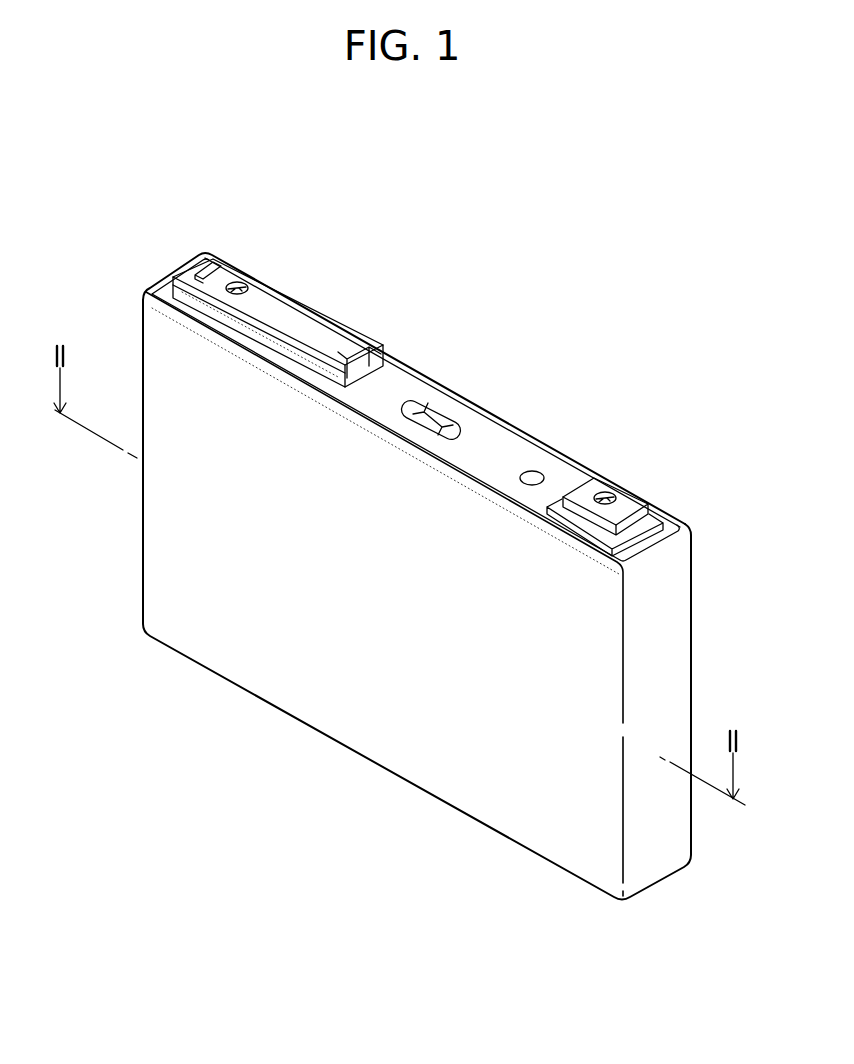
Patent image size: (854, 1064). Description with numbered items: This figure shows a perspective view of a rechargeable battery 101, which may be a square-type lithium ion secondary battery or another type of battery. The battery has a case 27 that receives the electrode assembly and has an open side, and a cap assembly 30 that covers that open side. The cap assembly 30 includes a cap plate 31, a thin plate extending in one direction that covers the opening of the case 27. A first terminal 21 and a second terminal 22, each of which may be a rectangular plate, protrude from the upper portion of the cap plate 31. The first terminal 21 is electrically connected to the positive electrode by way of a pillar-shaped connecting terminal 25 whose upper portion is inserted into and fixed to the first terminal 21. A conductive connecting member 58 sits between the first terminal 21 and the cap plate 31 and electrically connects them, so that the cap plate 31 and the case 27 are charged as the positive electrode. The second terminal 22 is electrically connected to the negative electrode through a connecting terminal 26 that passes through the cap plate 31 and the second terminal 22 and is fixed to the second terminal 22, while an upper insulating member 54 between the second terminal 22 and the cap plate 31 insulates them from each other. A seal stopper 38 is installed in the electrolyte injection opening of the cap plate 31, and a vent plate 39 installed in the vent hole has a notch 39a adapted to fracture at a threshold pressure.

The rechargeable battery 101 is at (468, 216).
The first terminal 21 is at (632, 500).
The second terminal 22 is at (278, 300).
The connecting terminal 25 is at (605, 492).
The connecting terminal 26 is at (238, 282).
The case 27 is at (370, 722).
The cap assembly 30 is at (513, 425).
The cap plate 31 is at (392, 382).
The seal stopper 38 is at (535, 471).
The vent plate 39 is at (431, 406).
The notch 39a is at (446, 425).
The upper insulating member 54 is at (343, 322).
The connecting member 58 is at (656, 508).